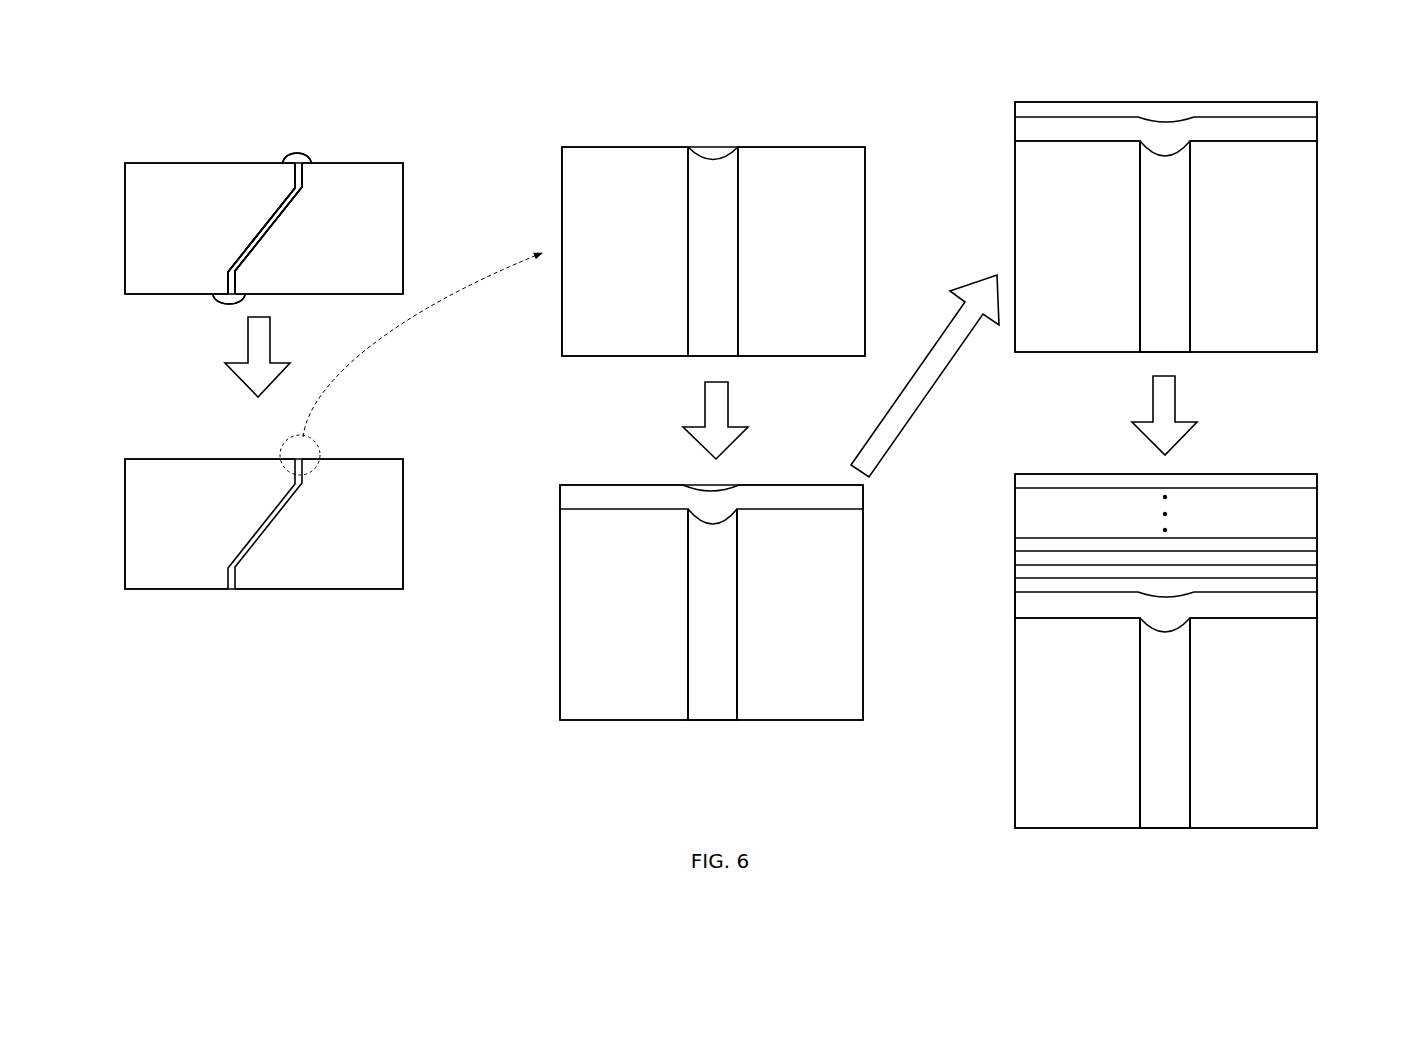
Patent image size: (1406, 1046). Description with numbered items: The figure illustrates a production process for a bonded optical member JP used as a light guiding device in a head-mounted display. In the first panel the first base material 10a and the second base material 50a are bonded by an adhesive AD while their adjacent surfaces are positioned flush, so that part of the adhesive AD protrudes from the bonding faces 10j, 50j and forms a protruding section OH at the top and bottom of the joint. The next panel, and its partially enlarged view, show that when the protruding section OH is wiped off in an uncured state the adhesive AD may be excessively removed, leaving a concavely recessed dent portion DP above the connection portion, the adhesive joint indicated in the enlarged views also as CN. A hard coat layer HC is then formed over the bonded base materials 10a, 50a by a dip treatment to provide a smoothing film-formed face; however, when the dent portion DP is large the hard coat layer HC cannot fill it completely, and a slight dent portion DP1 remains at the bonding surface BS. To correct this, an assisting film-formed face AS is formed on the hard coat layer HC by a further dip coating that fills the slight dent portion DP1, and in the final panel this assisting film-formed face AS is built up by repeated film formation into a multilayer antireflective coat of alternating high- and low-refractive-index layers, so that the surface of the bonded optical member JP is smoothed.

The second base material 50a is at (147, 240).
The first base material 10a is at (402, 247).
The adhesive AD is at (883, 197).
The connection portion CN is at (723, 572).
The bonded optical member JP is at (323, 140).
The bonding face 10j is at (270, 215).
The bonding face 50j is at (255, 247).
The protruding section OH is at (283, 158).
The bonding surface BS is at (293, 155).
The dent portion DP is at (292, 452).
The slight dent portion DP1 is at (700, 480).
The hard coat layer HC is at (570, 500).
The assisting film-formed face AS is at (1025, 109).